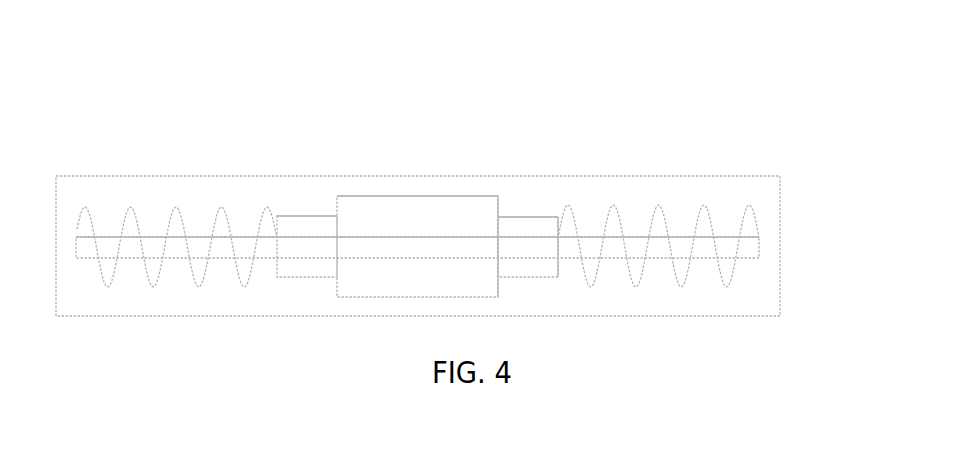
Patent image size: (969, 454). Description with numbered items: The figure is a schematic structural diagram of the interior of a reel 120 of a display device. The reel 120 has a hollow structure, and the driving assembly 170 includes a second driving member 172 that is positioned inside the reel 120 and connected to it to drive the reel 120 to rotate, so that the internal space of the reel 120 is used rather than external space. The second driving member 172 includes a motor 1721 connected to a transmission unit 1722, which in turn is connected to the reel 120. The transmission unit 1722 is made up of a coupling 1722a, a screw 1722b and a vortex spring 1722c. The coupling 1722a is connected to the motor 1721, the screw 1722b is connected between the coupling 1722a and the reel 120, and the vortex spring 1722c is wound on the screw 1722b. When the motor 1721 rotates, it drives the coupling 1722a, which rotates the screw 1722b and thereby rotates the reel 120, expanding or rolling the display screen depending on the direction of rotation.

The reel 120 is at (778, 248).
The driving assembly 170 is at (417, 156).
The second driving member 172 is at (596, 58).
The motor 1721 is at (462, 237).
The transmission unit 1722 is at (662, 105).
The coupling 1722a is at (533, 243).
The screw 1722b is at (597, 248).
The vortex spring 1722c is at (656, 207).